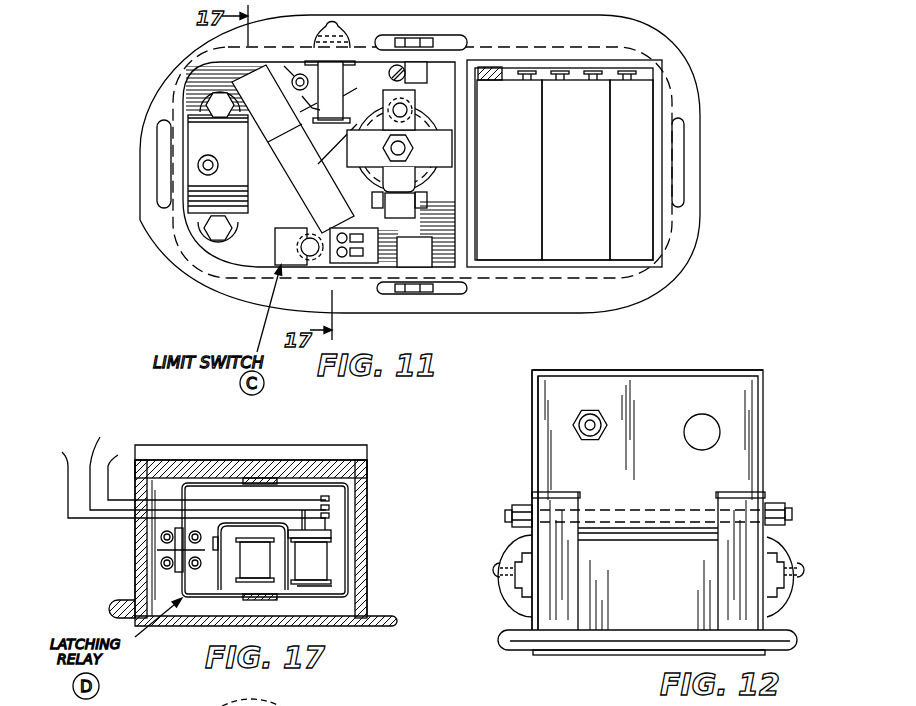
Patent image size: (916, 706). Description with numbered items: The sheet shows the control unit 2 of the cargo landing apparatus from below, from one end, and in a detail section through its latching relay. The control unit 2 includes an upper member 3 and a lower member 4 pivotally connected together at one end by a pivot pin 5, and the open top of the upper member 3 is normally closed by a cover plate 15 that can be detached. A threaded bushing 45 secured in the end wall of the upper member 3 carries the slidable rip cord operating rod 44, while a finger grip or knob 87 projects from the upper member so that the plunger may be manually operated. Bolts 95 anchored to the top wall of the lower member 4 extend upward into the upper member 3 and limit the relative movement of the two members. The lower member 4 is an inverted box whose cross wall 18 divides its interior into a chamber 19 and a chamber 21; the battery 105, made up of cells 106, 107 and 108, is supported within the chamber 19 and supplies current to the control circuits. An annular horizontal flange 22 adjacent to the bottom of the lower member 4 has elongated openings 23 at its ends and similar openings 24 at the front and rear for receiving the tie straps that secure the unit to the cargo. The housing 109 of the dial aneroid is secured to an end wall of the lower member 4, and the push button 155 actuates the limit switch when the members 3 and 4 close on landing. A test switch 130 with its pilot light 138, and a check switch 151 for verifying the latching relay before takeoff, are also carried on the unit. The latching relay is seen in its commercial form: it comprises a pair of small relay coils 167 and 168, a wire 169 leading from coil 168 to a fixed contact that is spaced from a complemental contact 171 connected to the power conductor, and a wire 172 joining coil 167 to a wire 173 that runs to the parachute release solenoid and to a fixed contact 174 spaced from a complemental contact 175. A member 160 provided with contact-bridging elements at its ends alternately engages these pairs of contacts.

In FIG. 12, the control unit 2 is at (757, 361).
In FIG. 17, the control unit 2 is at (372, 444).
In FIG. 12, the upper member 3 is at (550, 448).
In FIG. 17, the upper member 3 is at (220, 453).
In FIG. 11, the lower member 4 is at (666, 287).
In FIG. 12, the lower member 4 is at (540, 597).
In FIG. 17, the lower member 4 is at (135, 565).
In FIG. 12, the pivot pin 5 is at (509, 515).
In FIG. 12, the cover plate 15 is at (670, 372).
In FIG. 11, the cross wall 18 is at (462, 193).
In FIG. 11, the chamber 19 is at (653, 222).
In FIG. 11, the chamber 21 is at (237, 258).
In FIG. 11, the annular horizontal flange 22 is at (248, 297).
In FIG. 11, the elongated openings 23 is at (160, 140).
In FIG. 11, the openings 24 is at (447, 37).
In FIG. 12, the rip cord operating rod 44 is at (583, 438).
In FIG. 12, the threaded bushing 45 is at (597, 410).
In FIG. 12, the finger grip or knob 87 is at (721, 430).
In FIG. 11, the bolts 95 is at (210, 100).
In FIG. 11, the battery 105 is at (616, 177).
In FIG. 11, the cell 106 is at (509, 165).
In FIG. 11, the cell 107 is at (576, 165).
In FIG. 11, the cell 108 is at (631, 165).
In FIG. 11, the housing 109 is at (202, 198).
In FIG. 12, the test switch 130 is at (496, 556).
In FIG. 11, the pilot light 138 is at (320, 16).
In FIG. 12, the check switch 151 is at (796, 552).
In FIG. 11, the push button 155 is at (320, 268).
In FIG. 17, the member 160 is at (290, 536).
In FIG. 17, the relay coil 167 is at (247, 566).
In FIG. 17, the relay coil 168 is at (317, 565).
In FIG. 17, the wire 169 is at (187, 477).
In FIG. 17, the contact 171 is at (330, 515).
In FIG. 17, the wire 172 is at (217, 469).
In FIG. 17, the wire 173 is at (330, 499).
In FIG. 17, the fixed contact 174 is at (330, 508).
In FIG. 17, the contact 175 is at (208, 467).